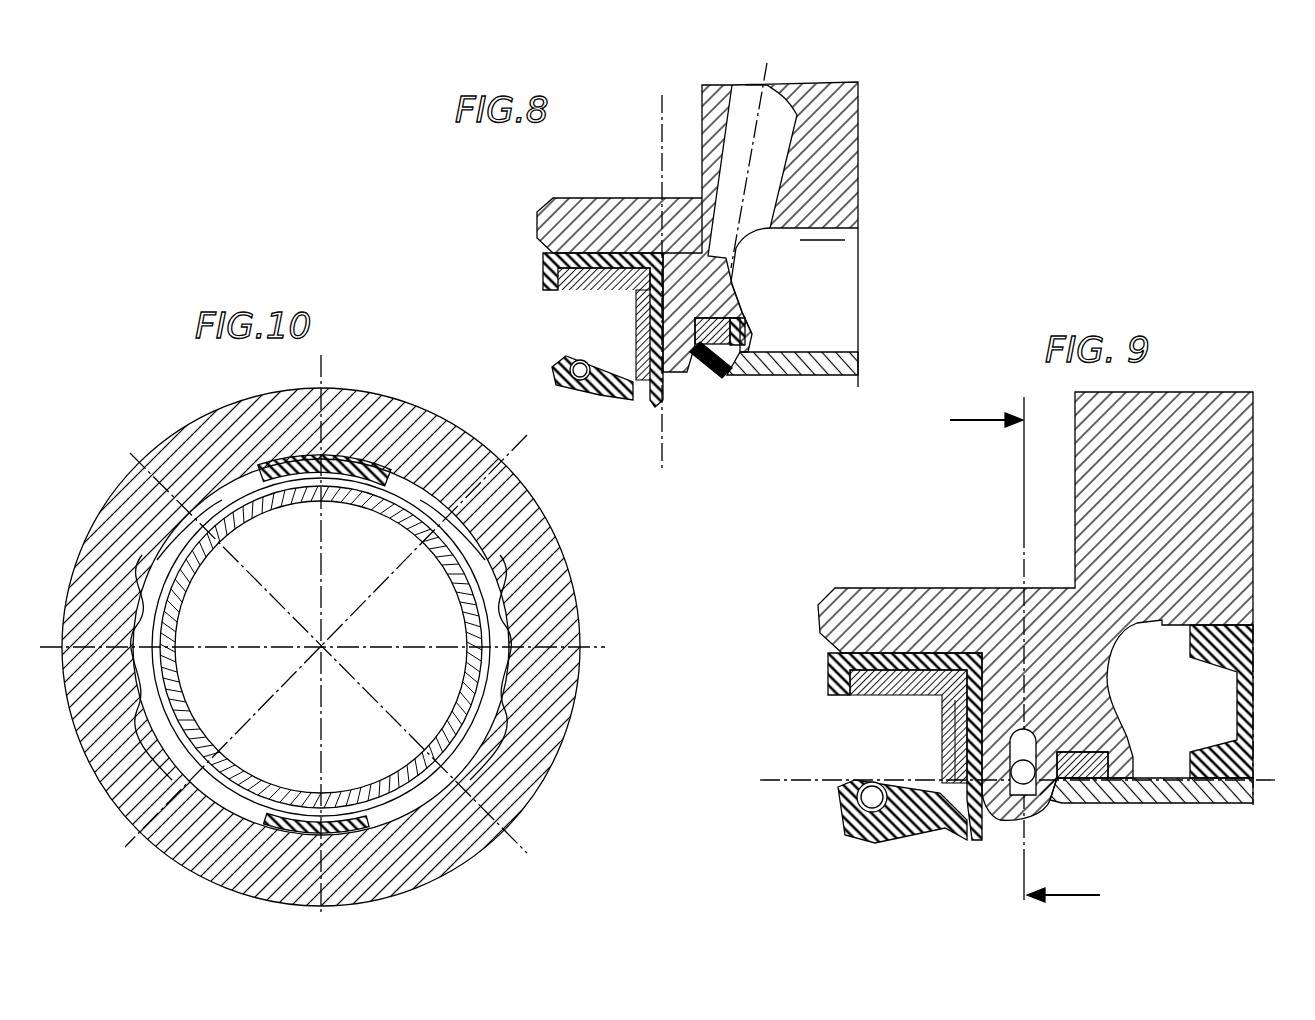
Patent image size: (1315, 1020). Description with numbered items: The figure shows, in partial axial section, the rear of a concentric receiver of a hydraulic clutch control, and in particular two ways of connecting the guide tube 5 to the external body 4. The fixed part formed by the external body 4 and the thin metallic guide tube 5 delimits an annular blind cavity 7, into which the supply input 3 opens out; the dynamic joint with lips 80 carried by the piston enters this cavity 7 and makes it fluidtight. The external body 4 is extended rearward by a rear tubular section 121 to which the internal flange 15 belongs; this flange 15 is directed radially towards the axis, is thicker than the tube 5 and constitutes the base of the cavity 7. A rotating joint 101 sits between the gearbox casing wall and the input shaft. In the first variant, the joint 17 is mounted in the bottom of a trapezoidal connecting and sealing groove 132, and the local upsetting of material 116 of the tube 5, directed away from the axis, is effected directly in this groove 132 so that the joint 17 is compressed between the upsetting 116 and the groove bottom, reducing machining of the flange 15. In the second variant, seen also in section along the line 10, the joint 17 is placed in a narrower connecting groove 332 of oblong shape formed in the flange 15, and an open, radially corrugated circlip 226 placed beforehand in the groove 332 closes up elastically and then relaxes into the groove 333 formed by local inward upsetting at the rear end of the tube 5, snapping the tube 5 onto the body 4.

In FIG. 8, the supply input 3 is at (772, 88).
In FIG. 8, the external body 4 is at (697, 140).
In FIG. 8, the guide tube 5 is at (803, 378).
In FIG. 9, the guide tube 5 is at (1207, 808).
In FIG. 10, the guide tube 5 is at (448, 730).
In FIG. 8, the cavity 7 is at (845, 240).
In FIG. 9, the cavity 7 is at (1190, 617).
In FIG. 9, the line 10 is at (1030, 661).
In FIG. 8, the internal flange 15 is at (690, 282).
In FIG. 9, the internal flange 15 is at (1000, 660).
In FIG. 10, the internal flange 15 is at (192, 442).
In FIG. 8, the joint 17 is at (735, 321).
In FIG. 9, the joint 17 is at (1115, 765).
In FIG. 9, the dynamic joint with lips 80 is at (1250, 692).
In FIG. 8, the rotating joint 101 is at (628, 402).
In FIG. 9, the rotating joint 101 is at (888, 847).
In FIG. 8, the local upsetting of material 116 is at (717, 365).
In FIG. 8, the rear tubular section 121 is at (590, 198).
In FIG. 8, the connecting and sealing groove 132 is at (735, 350).
In FIG. 9, the circlip 226 is at (1063, 807).
In FIG. 10, the circlip 226 is at (513, 590).
In FIG. 9, the connecting groove 332 is at (945, 748).
In FIG. 10, the connecting groove 332 is at (510, 628).
In FIG. 9, the groove 333 is at (1028, 790).
In FIG. 10, the groove 333 is at (353, 470).